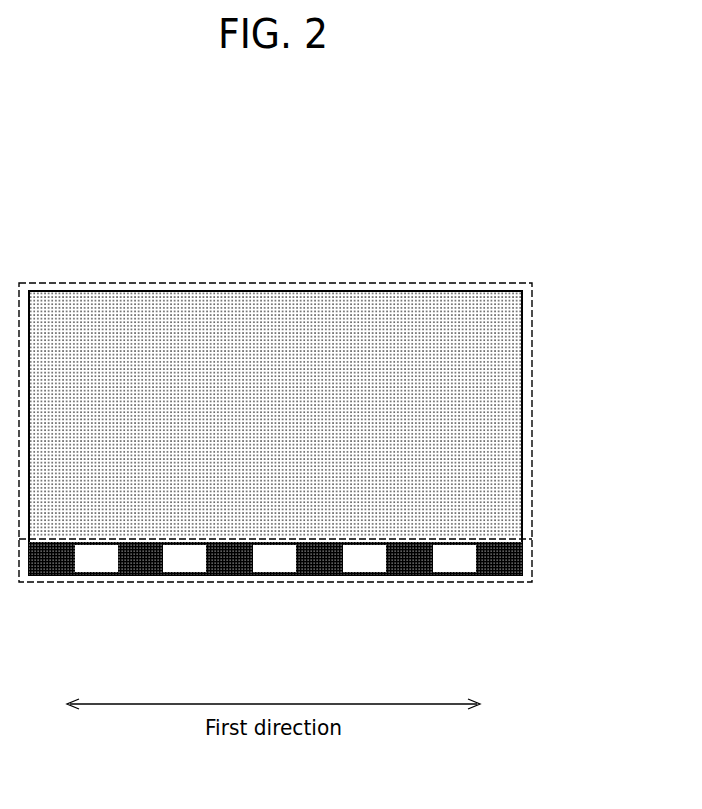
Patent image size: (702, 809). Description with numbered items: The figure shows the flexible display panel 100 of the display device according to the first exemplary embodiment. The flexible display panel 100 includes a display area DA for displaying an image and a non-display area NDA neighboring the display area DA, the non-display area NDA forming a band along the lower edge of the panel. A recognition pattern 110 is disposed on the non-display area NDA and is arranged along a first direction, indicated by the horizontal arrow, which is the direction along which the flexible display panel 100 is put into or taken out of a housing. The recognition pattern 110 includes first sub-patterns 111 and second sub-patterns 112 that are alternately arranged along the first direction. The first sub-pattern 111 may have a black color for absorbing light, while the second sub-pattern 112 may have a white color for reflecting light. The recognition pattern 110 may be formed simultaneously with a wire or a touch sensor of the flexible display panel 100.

The flexible display panel 100 is at (293, 208).
The recognition pattern 110 is at (275, 614).
The first sub-pattern 111 is at (405, 575).
The second sub-pattern 112 is at (457, 563).
The display area DA is at (532, 440).
The non-display area NDA is at (316, 614).